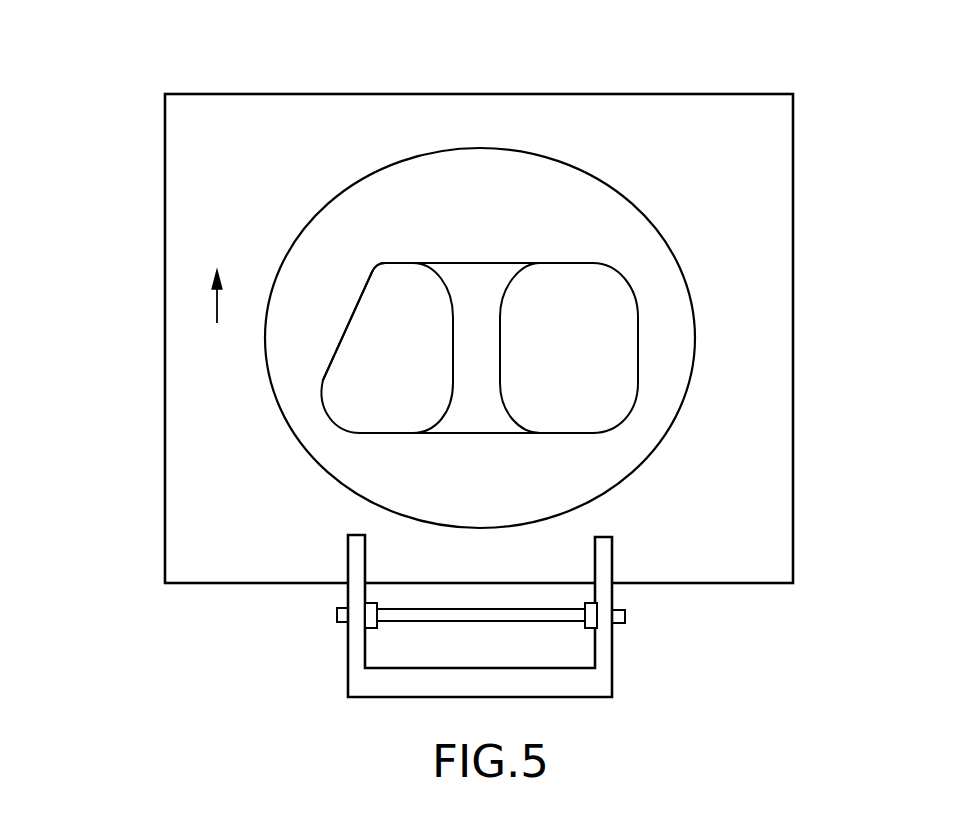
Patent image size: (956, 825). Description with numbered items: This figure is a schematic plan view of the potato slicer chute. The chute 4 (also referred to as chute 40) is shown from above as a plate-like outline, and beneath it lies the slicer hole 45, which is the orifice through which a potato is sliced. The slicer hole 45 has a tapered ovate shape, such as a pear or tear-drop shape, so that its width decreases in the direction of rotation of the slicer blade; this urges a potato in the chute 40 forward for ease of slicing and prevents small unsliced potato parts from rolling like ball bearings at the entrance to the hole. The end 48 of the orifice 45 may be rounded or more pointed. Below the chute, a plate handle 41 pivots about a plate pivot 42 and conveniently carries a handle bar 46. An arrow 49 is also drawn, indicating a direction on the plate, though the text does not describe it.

The chute 40 is at (230, 108).
The chute 4 is at (518, 168).
The end of orifice 48 is at (377, 248).
The slicer hole 45 is at (338, 379).
The direction arrow 49 is at (215, 308).
The plate handle 41 is at (348, 639).
The plate pivot 42 is at (625, 616).
The handle bar 46 is at (527, 687).